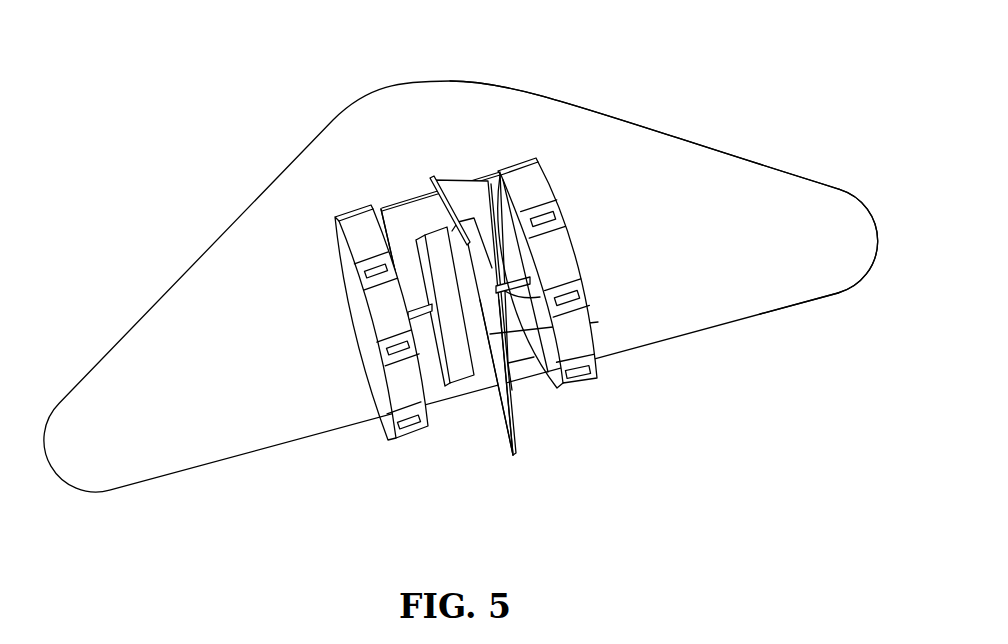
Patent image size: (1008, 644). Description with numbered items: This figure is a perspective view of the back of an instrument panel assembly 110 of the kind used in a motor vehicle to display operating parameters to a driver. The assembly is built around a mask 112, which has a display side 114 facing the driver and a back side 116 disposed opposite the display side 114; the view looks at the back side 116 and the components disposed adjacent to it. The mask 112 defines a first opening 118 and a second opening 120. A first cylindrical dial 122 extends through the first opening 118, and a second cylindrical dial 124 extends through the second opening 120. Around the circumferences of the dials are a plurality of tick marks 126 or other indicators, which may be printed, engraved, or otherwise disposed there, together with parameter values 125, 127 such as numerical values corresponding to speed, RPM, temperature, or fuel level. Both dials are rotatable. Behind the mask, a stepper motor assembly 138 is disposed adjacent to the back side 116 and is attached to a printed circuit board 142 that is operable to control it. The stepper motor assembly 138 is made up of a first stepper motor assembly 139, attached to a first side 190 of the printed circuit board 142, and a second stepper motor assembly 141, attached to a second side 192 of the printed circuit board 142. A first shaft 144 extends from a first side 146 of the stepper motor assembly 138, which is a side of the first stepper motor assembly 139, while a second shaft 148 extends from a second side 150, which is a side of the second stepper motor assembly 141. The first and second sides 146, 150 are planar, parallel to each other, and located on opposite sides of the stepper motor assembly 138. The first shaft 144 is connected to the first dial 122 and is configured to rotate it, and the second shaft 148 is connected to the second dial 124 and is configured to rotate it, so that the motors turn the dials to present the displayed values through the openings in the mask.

The instrument panel assembly 110 is at (667, 110).
The mask 112 is at (856, 305).
The display side 114 is at (770, 167).
The back side 116 is at (583, 128).
The first opening 118 is at (352, 338).
The second opening 120 is at (577, 261).
The first cylindrical dial 122 is at (408, 444).
The second cylindrical dial 124 is at (587, 383).
The parameter values 125 is at (360, 239).
The tick marks 126 is at (388, 350).
The parameter values 127 is at (570, 255).
The stepper motor assembly 138 is at (516, 401).
The first stepper motor assembly 139 is at (459, 392).
The second stepper motor assembly 141 is at (466, 225).
The printed circuit board 142 is at (433, 179).
The first shaft 144 is at (421, 322).
The first side 146 is at (382, 227).
The second shaft 148 is at (570, 291).
The second side 150 is at (598, 322).
The first side of the printed circuit board 190 is at (420, 257).
The second side of the printed circuit board 192 is at (514, 395).